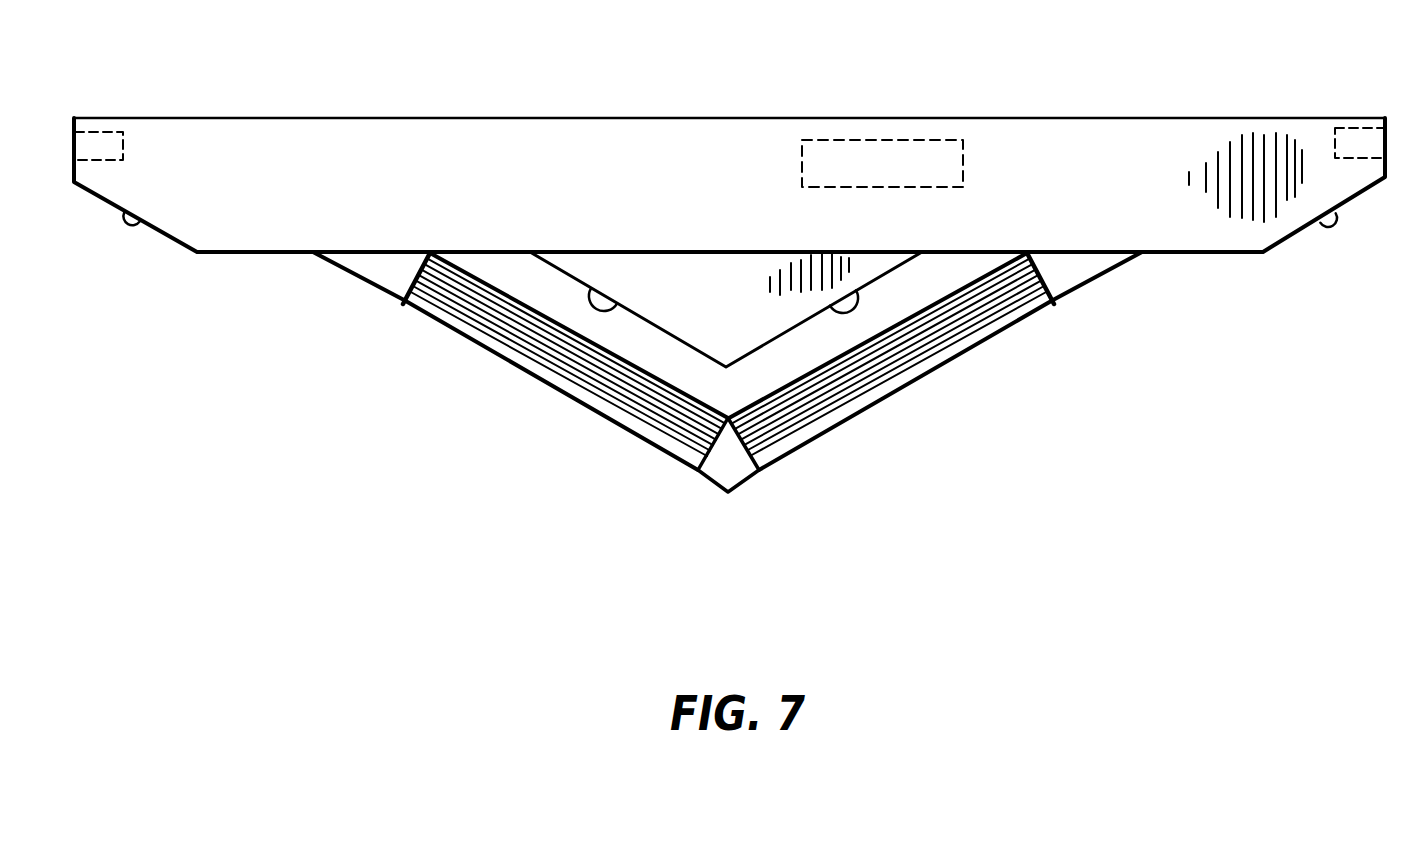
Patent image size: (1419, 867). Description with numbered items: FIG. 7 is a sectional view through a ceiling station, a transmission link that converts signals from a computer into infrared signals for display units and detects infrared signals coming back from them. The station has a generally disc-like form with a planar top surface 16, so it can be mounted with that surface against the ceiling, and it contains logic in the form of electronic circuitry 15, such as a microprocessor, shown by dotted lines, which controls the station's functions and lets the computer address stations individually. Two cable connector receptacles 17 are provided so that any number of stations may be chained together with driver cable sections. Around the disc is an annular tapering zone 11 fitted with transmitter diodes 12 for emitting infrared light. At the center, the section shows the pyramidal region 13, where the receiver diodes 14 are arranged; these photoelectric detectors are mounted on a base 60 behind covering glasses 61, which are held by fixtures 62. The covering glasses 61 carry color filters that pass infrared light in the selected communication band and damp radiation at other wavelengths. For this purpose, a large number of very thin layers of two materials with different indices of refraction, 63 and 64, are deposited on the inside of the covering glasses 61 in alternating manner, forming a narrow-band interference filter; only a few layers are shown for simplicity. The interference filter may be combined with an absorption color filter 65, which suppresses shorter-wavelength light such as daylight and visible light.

The annular tapering zone 11 is at (1288, 238).
The transmitter diodes 12 is at (130, 230).
The pyramidal region 13 is at (697, 390).
The receiver diodes 14 is at (842, 305).
The electronic circuitry 15 is at (918, 155).
The planar top surface 16 is at (1134, 108).
The cable connector receptacles 17 is at (106, 138).
The base 60 is at (679, 285).
The covering glasses 61 is at (575, 385).
The fixtures 62 is at (327, 263).
The first material layers 63 is at (450, 300).
The second material layers 64 is at (470, 320).
The absorption color filter 65 is at (492, 338).